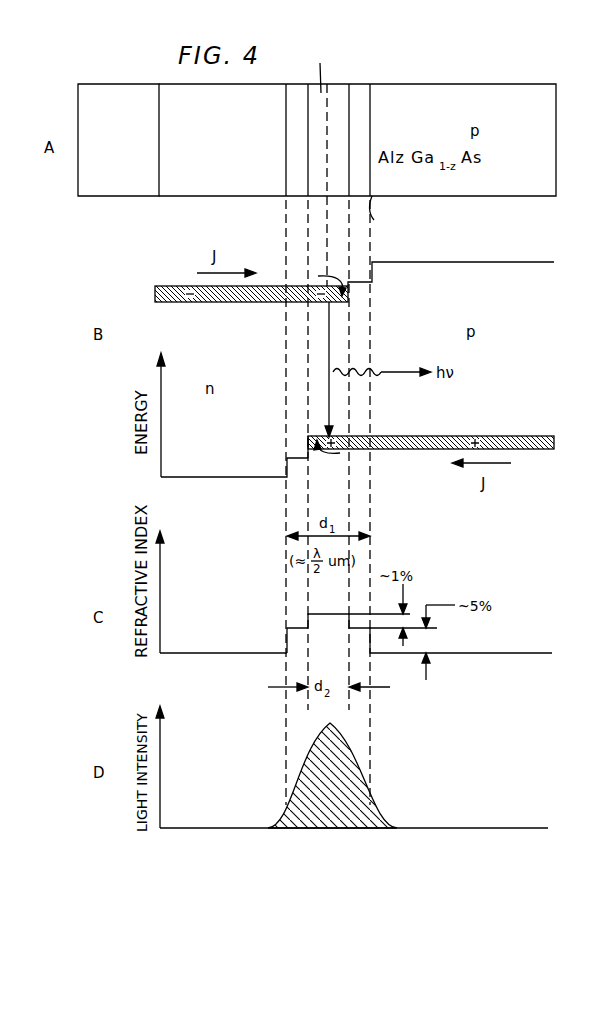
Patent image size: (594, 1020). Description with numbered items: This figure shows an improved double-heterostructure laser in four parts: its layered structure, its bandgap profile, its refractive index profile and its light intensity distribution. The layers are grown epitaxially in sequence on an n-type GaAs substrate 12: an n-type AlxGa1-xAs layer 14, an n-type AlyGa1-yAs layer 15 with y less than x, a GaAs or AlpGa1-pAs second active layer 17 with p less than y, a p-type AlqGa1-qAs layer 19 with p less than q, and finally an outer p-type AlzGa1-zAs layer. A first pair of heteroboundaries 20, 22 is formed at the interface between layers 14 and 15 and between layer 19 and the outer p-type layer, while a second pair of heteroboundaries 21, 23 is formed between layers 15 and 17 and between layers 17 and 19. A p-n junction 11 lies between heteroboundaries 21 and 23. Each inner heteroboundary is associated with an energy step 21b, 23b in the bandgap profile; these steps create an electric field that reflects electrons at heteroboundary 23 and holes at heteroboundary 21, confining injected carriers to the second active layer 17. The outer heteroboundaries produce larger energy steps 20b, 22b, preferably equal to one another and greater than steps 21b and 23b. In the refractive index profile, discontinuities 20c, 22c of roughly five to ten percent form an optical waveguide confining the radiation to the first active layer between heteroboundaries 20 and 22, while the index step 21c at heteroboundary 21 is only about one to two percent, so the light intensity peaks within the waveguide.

The p-n junction 11 is at (326, 110).
The n-type GaAs substrate 12 is at (124, 194).
The n-type AlxGa1-xAs layer 14 is at (212, 194).
The n-type AlyGa1-yAs layer 15 is at (253, 220).
The second active layer 17 is at (316, 197).
The p-type AlqGa1-qAs layer 19 is at (362, 190).
The heteroboundary 20 is at (286, 102).
The heteroboundary 21 is at (308, 130).
The heteroboundary 22 is at (372, 103).
The heteroboundary 23 is at (350, 127).
The energy step 20b is at (287, 459).
The energy step 21b is at (308, 443).
The energy step 22b is at (374, 271).
The energy step 23b is at (349, 418).
The refractive index step 20c is at (287, 642).
The refractive index step 21c is at (308, 617).
The refractive index step 22c is at (371, 640).